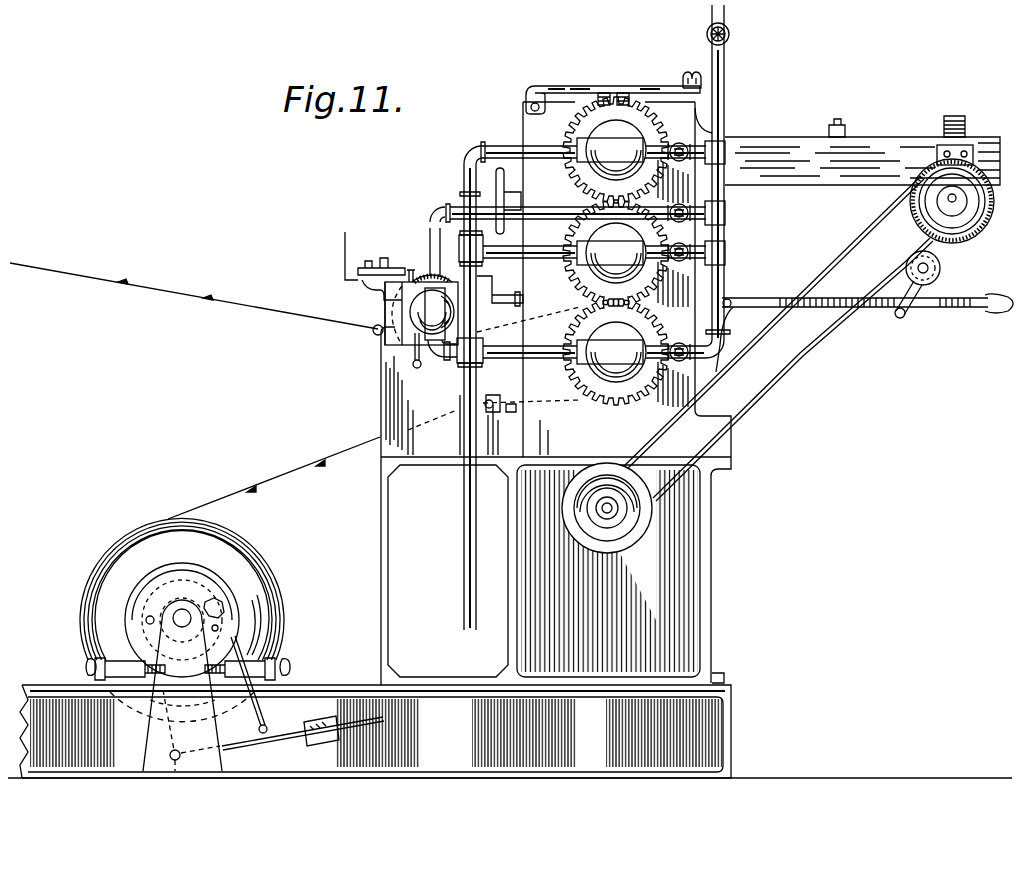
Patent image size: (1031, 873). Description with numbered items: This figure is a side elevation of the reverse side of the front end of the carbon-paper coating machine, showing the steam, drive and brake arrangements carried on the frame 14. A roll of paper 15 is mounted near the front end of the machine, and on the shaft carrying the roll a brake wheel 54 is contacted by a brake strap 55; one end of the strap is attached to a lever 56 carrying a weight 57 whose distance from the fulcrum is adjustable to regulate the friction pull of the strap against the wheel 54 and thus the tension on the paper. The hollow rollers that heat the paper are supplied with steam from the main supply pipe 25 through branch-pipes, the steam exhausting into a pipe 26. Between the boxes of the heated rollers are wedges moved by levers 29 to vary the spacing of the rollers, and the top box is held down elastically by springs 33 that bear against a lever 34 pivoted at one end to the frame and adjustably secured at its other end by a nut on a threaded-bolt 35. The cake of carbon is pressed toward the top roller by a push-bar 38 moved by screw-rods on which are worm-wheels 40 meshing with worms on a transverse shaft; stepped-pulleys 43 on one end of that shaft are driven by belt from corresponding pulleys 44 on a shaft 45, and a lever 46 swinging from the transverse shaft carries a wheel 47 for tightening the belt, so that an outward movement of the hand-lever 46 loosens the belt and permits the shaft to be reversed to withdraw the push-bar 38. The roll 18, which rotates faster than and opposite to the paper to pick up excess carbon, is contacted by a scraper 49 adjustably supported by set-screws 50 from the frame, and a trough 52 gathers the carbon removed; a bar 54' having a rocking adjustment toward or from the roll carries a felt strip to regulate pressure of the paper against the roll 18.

The frame 14 is at (380, 406).
The roll of paper 15 is at (262, 572).
The roll 18 is at (430, 282).
The pipe 25 is at (726, 275).
The pipe 26 is at (462, 493).
The levers 29 is at (990, 311).
The springs 33 is at (622, 92).
The lever 34 is at (568, 87).
The threaded-bolt 35 is at (692, 72).
The push-bar 38 is at (846, 130).
The worm-wheels 40 is at (953, 115).
The stepped-pulleys 43 is at (955, 216).
The pulleys 44 is at (632, 543).
The shaft 45 is at (604, 506).
The lever 46 is at (917, 314).
The wheel 47 is at (941, 276).
The scraper 49 is at (410, 280).
The set-screws 50 is at (388, 272).
The trough 52 is at (344, 252).
The brake wheel 54 is at (182, 672).
The bar 54' is at (427, 360).
The brake strap 55 is at (240, 640).
The lever 56 is at (284, 728).
The weight 57 is at (326, 741).